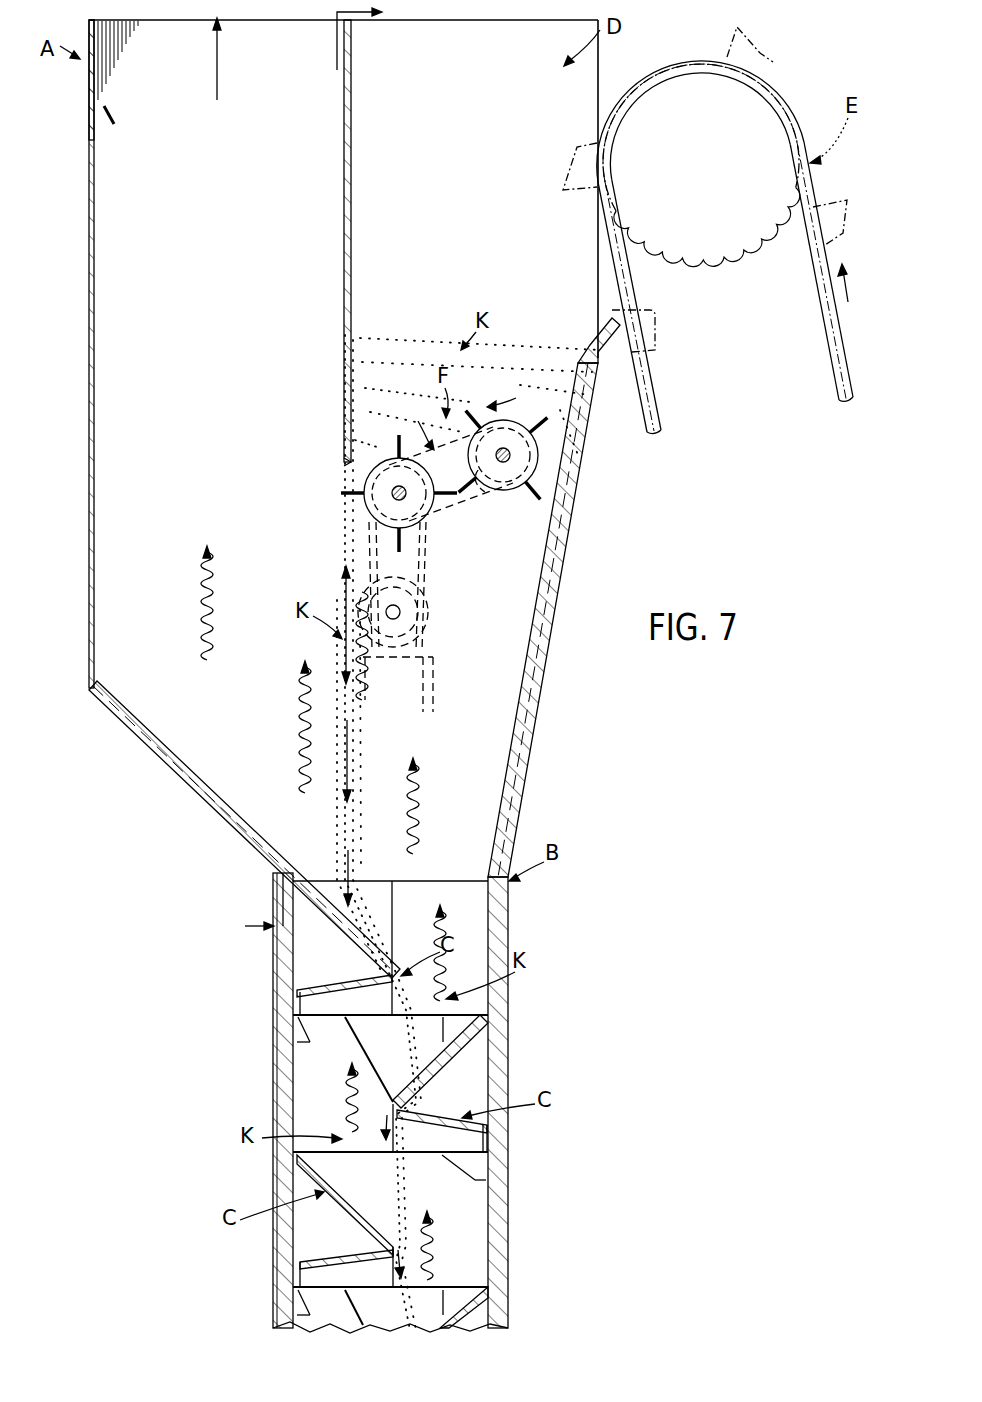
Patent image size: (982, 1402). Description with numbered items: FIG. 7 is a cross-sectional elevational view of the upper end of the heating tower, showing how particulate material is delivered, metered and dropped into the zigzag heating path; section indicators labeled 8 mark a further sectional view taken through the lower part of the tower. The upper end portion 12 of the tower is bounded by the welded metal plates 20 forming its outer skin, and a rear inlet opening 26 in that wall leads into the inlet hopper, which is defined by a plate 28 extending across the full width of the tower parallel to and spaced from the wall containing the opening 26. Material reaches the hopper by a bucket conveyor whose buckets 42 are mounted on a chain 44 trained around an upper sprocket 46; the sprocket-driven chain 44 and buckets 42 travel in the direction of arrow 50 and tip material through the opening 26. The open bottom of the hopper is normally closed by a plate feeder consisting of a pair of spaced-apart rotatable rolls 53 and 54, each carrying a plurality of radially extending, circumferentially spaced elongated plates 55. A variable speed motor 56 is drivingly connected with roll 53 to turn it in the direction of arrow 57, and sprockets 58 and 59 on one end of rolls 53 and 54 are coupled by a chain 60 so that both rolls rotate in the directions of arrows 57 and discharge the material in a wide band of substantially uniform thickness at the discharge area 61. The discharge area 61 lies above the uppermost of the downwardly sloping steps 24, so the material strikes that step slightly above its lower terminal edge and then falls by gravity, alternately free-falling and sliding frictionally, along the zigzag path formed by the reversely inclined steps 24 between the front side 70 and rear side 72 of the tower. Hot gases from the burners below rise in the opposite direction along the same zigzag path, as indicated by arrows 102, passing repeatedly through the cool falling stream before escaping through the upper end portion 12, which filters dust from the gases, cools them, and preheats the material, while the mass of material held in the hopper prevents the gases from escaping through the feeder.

The section line 8- 8 is at (318, 467).
The upper end portion 12 is at (89, 93).
The metal plates 20 is at (89, 300).
The downwardly sloping steps 24 is at (360, 930).
The rear inlet opening 26 is at (598, 80).
The plate 28 is at (343, 112).
The buckets 42 is at (770, 56).
The chain 44 is at (838, 330).
The upper sprocket 46 is at (735, 270).
The arrow 50 is at (848, 272).
The rotatable roll 53 is at (363, 490).
The rotatable roll 54 is at (541, 499).
The elongated plates 55 is at (535, 432).
The variable speed motor 56 is at (433, 630).
The arrow 57 is at (506, 398).
The sprocket 58 is at (366, 514).
The sprocket 59 is at (486, 493).
The chain 60 is at (441, 520).
The discharge area 61 is at (345, 468).
The front side 70 is at (273, 1105).
The rear side 72 is at (508, 1205).
The arrows 102 is at (217, 62).